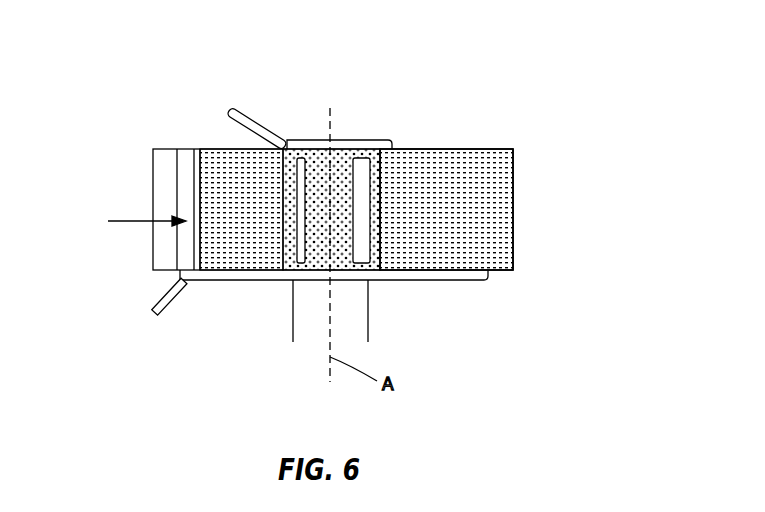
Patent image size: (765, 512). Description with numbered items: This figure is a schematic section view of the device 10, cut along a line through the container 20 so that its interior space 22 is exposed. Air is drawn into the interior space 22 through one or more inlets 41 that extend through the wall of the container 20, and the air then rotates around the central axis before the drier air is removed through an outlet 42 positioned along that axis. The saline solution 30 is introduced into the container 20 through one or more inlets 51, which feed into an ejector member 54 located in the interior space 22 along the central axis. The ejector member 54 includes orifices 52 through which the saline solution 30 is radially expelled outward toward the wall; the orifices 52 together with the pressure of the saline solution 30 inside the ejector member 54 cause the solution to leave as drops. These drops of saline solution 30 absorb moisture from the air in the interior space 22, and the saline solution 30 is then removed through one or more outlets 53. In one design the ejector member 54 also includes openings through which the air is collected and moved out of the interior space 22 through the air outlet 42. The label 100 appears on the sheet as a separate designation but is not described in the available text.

The device 10 is at (90, 114).
The container 20 is at (513, 212).
The interior space 22 is at (477, 183).
The saline solution 30 is at (250, 242).
The inlets 41 is at (163, 235).
The outlet 42 is at (345, 275).
The inlets 51 is at (261, 118).
The orifices 52 is at (343, 167).
The outlets 53 is at (158, 299).
The ejector member 54 is at (338, 210).
The filter system 100 is at (668, 194).